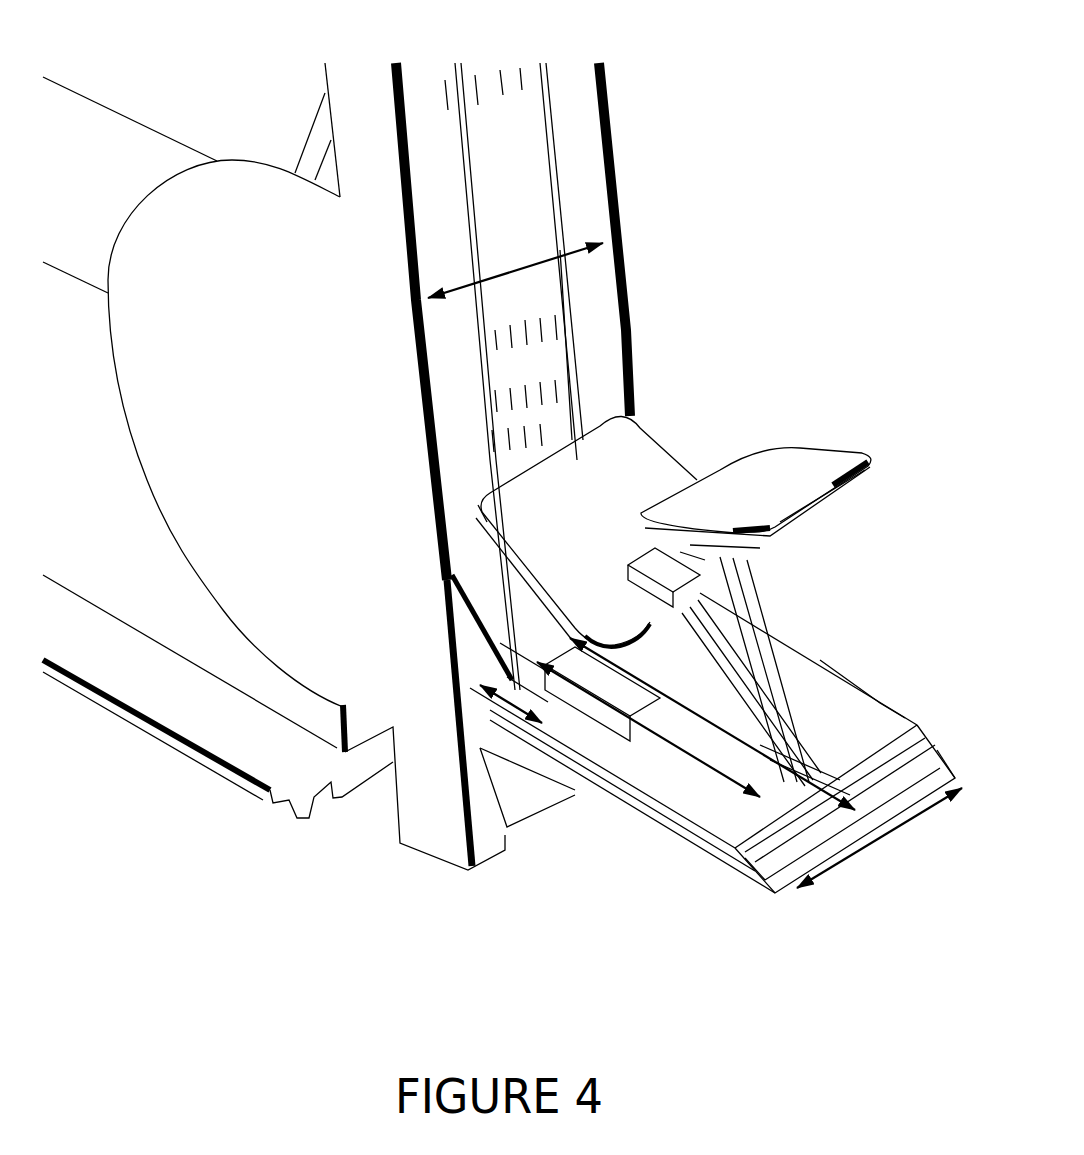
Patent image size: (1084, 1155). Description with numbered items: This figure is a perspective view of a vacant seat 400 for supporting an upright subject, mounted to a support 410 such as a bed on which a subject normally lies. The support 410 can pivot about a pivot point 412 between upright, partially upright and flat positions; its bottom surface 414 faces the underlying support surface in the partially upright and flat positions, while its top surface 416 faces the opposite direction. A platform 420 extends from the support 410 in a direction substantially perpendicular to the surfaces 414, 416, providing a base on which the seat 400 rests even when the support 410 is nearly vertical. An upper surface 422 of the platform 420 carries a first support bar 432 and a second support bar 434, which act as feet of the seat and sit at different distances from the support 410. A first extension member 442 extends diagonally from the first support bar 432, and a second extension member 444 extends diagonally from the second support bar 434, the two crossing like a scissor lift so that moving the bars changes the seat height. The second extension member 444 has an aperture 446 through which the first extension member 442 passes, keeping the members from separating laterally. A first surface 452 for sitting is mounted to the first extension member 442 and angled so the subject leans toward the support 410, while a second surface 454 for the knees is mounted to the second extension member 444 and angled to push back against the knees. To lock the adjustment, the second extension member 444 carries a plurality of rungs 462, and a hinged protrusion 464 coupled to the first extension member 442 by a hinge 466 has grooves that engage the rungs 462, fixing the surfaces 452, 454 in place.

The seat 400 is at (780, 390).
The support 410 is at (230, 548).
The pivot point 412 is at (255, 399).
The bottom surface 414 is at (325, 87).
The top surface 416 is at (567, 137).
The platform 420 is at (682, 818).
The upper surface 422 is at (848, 730).
The first support bar 432 is at (560, 697).
The second support bar 434 is at (770, 818).
The first extension member 442 is at (700, 547).
The second extension member 444 is at (790, 740).
The aperture 446 is at (647, 573).
The first surface 452 is at (832, 487).
The second surface 454 is at (482, 520).
The rungs 462 is at (778, 470).
The hinged protrusion 464 is at (638, 462).
The hinge 466 is at (693, 560).